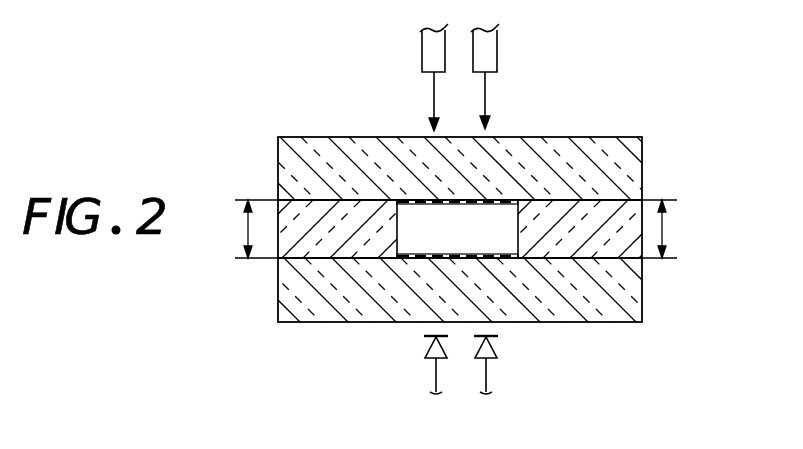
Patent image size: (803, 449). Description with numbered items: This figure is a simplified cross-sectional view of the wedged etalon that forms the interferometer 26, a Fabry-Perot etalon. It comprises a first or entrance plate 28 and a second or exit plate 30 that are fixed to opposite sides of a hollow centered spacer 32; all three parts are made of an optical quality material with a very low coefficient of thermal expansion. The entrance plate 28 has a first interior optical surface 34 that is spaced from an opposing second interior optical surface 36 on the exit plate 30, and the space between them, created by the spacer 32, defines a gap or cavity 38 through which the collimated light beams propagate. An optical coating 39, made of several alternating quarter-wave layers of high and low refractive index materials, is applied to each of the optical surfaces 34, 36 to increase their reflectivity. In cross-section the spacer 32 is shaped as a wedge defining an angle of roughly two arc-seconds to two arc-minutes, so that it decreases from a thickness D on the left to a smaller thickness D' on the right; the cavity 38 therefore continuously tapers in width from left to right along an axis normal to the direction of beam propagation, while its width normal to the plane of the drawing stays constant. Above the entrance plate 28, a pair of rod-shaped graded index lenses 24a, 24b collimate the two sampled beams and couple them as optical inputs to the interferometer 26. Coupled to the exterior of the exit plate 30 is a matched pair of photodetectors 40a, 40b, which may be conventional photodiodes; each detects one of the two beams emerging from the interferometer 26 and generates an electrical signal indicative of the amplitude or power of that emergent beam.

The graded index lens 24a is at (422, 47).
The graded index lens 24b is at (499, 52).
The interferometer 26 is at (670, 135).
The entrance plate 28 is at (276, 155).
The exit plate 30 is at (643, 306).
The spacer 32 is at (643, 210).
The first interior optical surface 34 is at (398, 205).
The second interior optical surface 36 is at (530, 260).
The cavity 38 is at (514, 201).
The optical coating 39 is at (482, 198).
The photodetector 40a is at (426, 359).
The photodetector 40b is at (499, 351).
The thickness D is at (242, 229).
The thickness D' is at (679, 229).